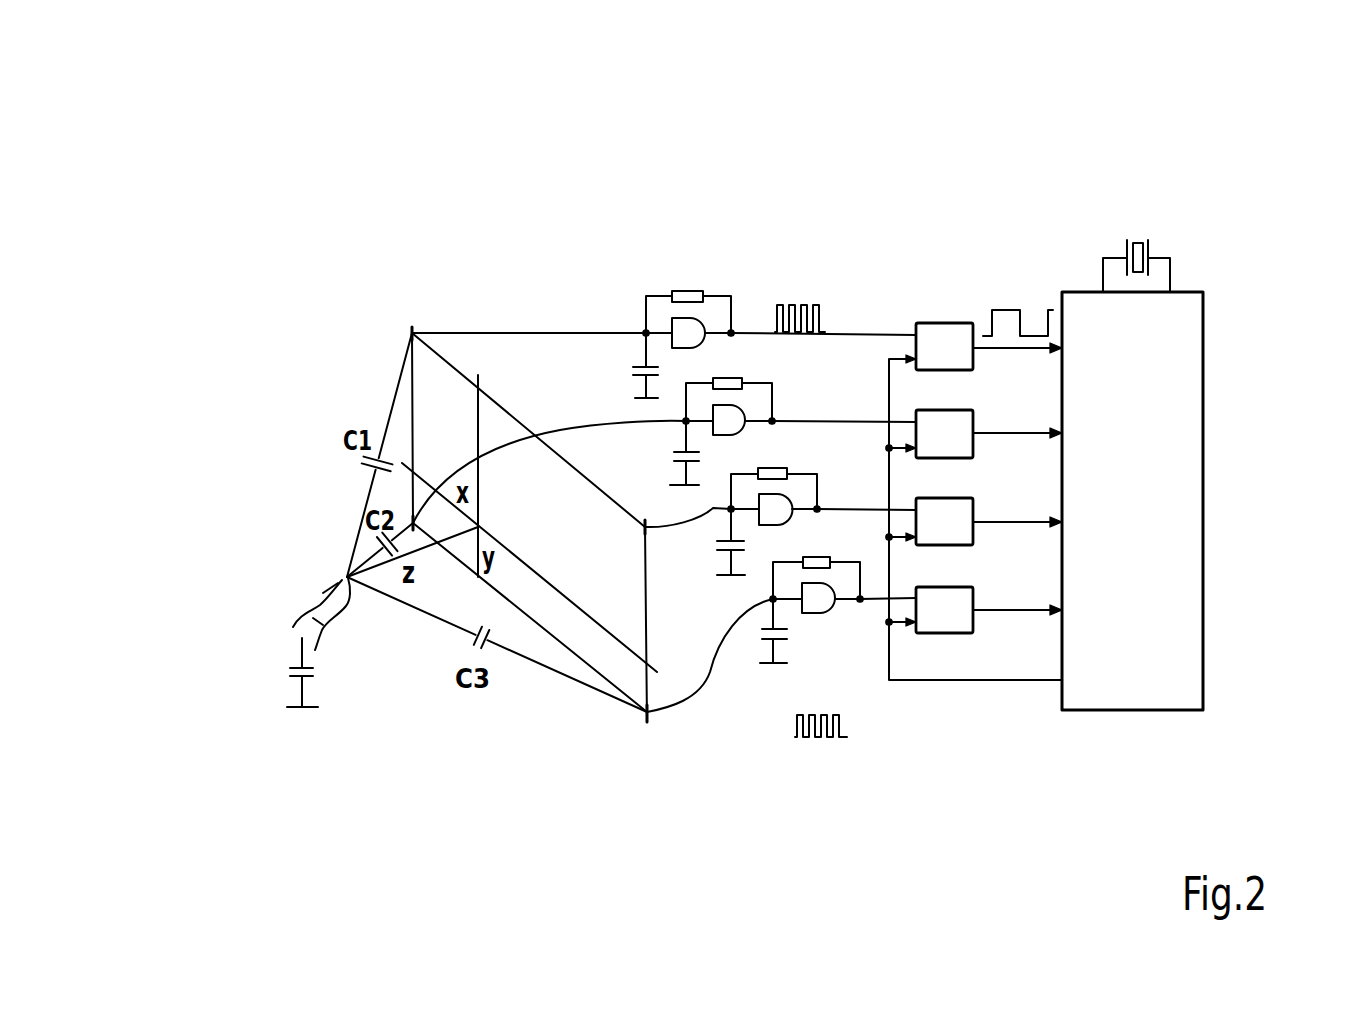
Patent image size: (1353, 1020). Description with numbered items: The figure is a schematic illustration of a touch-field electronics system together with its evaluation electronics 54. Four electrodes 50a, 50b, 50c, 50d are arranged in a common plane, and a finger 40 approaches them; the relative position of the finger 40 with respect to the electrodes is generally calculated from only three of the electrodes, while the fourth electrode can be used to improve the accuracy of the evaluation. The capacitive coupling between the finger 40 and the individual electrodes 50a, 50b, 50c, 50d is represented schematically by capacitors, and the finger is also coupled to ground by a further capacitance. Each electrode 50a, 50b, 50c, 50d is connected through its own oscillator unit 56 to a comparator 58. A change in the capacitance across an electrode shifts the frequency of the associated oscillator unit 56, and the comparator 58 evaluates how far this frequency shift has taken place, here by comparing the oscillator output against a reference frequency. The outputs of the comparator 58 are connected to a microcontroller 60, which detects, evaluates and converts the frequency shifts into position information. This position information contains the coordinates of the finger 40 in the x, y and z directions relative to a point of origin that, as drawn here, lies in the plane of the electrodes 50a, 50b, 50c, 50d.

The finger 40 is at (303, 614).
The electrode 50a is at (412, 333).
The electrode 50b is at (413, 523).
The electrode 50c is at (650, 717).
The electrode 50d is at (645, 527).
The evaluation circuit 54 is at (786, 388).
The oscillator unit 56 is at (660, 272).
The comparator 58 is at (958, 276).
The microcontroller 60 is at (1185, 392).